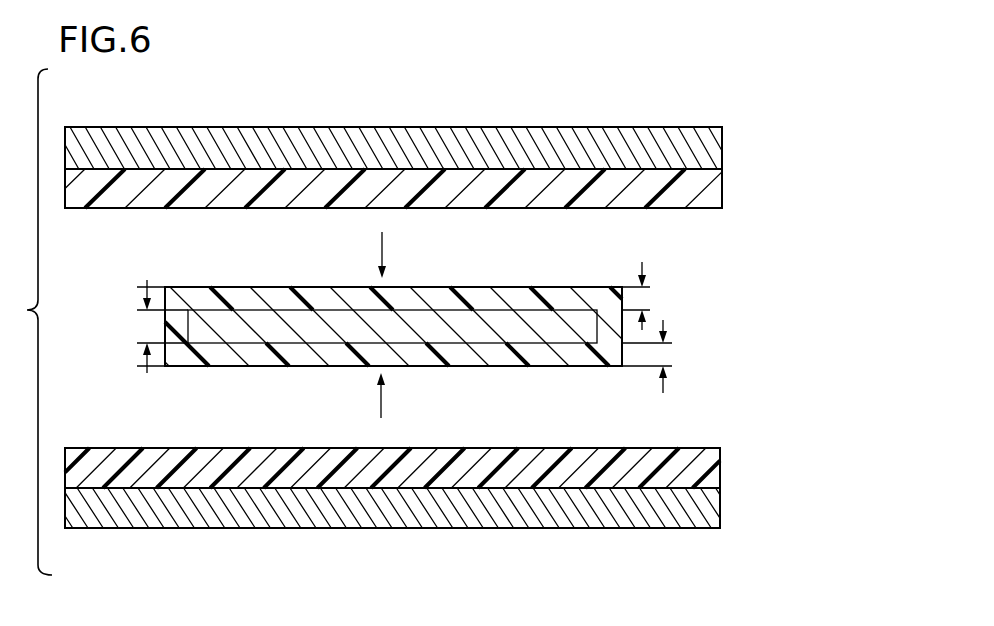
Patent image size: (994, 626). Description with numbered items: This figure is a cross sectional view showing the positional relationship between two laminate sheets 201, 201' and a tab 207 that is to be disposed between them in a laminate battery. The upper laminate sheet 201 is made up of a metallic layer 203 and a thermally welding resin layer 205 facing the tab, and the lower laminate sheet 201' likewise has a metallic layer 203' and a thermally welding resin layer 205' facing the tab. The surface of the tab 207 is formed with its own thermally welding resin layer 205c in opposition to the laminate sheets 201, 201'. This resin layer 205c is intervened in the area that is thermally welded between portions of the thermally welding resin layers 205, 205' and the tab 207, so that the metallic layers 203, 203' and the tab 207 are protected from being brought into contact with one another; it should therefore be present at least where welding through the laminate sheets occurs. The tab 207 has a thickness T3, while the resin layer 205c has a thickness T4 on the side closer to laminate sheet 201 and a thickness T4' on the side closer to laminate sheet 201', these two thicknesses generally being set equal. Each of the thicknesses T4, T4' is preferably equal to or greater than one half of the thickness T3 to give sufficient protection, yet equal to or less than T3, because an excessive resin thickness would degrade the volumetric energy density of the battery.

The laminate sheet 201 is at (467, 172).
The metallic layer 203 is at (431, 148).
The thermally welding resin layer 205 is at (431, 188).
The thermally welding resin layer 205c is at (393, 332).
The tab 207 is at (268, 323).
The laminate sheet 201' is at (468, 489).
The metallic layer 203' is at (428, 508).
The thermally welding resin layer 205' is at (428, 468).
The thickness of the tab T3 is at (147, 326).
The thickness of the thermally welding resin layer closer to laminate sheet 201 T4 is at (653, 296).
The thickness of the thermally welding resin layer closer to laminate sheet 201' T4' is at (666, 356).